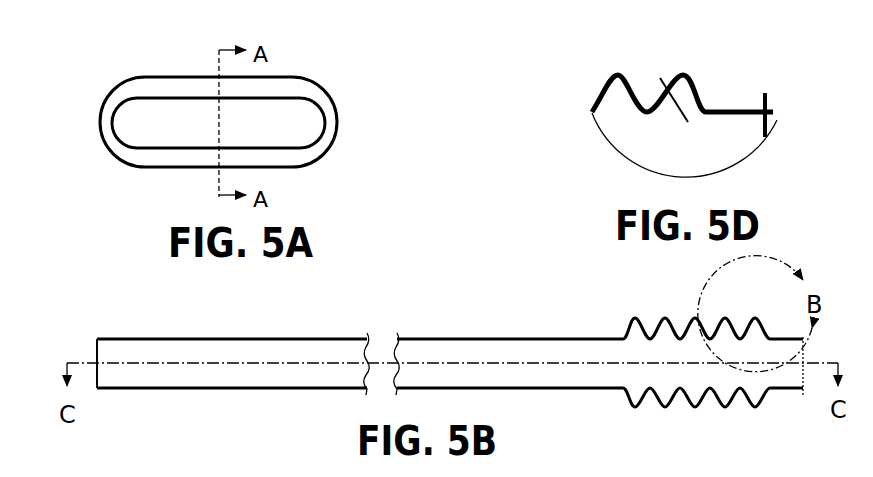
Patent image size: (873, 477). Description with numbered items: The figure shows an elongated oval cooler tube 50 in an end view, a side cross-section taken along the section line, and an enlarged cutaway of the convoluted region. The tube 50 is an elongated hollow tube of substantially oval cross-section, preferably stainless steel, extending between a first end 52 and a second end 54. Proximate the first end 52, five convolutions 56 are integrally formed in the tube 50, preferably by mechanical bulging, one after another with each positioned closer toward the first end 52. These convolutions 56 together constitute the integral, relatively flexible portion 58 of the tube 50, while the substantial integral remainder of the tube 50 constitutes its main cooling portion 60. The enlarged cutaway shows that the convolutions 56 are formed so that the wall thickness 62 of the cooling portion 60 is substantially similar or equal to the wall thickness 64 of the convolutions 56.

In FIG. 5A, the tube 50 is at (106, 77).
In FIG. 5B, the tube 50 is at (85, 334).
In FIG. 5A, the first end 52 is at (140, 151).
In FIG. 5B, the first end 52 is at (803, 395).
In FIG. 5B, the second end 54 is at (98, 390).
In FIG. 5A, the convolutions 56 is at (293, 81).
In FIG. 5D, the flexible portion 58 is at (617, 72).
In FIG. 5B, the flexible portion 58 is at (624, 316).
In FIG. 5B, the main cooling portion 60 is at (346, 332).
In FIG. 5D, the wall thickness of cooling portion 62 is at (765, 97).
In FIG. 5D, the wall thickness of convolutions 64 is at (664, 86).